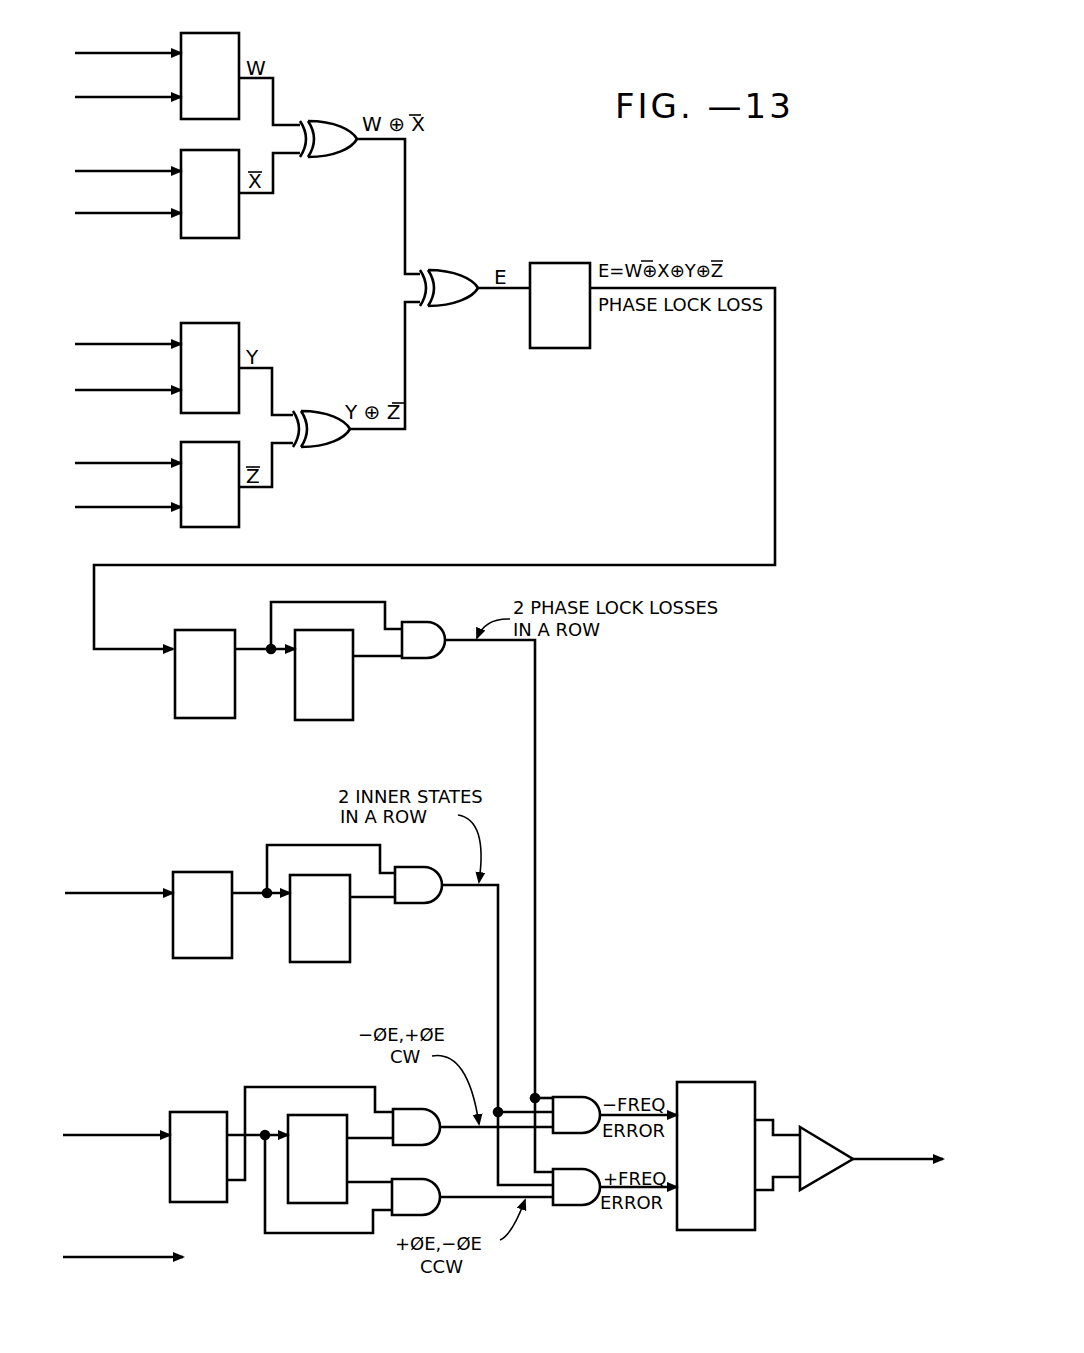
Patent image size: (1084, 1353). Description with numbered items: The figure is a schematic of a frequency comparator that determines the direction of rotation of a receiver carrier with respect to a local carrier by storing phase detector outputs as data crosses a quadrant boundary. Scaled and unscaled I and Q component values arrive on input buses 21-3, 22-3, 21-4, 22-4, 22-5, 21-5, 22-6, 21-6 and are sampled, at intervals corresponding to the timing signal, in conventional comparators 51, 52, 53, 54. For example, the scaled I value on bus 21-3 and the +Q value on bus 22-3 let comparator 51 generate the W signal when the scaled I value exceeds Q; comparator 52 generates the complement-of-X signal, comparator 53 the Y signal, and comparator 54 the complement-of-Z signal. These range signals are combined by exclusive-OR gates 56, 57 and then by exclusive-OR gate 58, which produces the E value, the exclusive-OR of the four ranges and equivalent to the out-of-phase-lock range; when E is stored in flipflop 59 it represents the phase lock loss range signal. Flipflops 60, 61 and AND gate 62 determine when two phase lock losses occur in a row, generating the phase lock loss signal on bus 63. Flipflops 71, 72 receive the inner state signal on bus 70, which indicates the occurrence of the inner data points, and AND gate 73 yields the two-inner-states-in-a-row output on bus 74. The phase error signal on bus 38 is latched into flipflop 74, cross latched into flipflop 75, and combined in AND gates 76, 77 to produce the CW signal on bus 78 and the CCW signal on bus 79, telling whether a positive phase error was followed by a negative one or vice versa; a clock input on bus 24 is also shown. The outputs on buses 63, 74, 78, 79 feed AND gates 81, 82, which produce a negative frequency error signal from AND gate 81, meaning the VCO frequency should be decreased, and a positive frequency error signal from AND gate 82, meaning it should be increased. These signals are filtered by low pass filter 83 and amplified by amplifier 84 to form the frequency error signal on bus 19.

The comparator 51 is at (232, 46).
The comparator 52 is at (232, 228).
The comparator 53 is at (232, 338).
The comparator 54 is at (232, 520).
The exclusive-OR gate 56 is at (327, 121).
The exclusive-OR gate 57 is at (330, 446).
The exclusive-OR gate 58 is at (448, 270).
The flipflop 59 is at (564, 268).
The flipflop 60 is at (172, 704).
The flipflop 61 is at (353, 712).
The AND gate 62 is at (427, 660).
The bus 63 is at (536, 700).
The bus 70 is at (68, 892).
The flipflop 71 is at (200, 878).
The flipflop 72 is at (350, 946).
The AND gate 73 is at (427, 905).
The flipflop 74 is at (455, 876).
The flipflop 75 is at (343, 1165).
The AND gate 76 is at (438, 1140).
The AND gate 77 is at (408, 1188).
The bus 78 is at (446, 1118).
The bus 79 is at (478, 1196).
The AND gate 81 is at (568, 1100).
The AND gate 82 is at (573, 1206).
The low pass filter 83 is at (723, 1090).
The amplifier 84 is at (822, 1142).
The bus 19 is at (915, 1155).
The bus 38 is at (70, 1137).
The clock input 24 is at (118, 1259).
The bus 21-3 is at (76, 52).
The bus 22-3 is at (86, 98).
The signal input +I 21-4 is at (76, 170).
The signal input -.417Q 22-4 is at (88, 214).
The signal input +.417Q 22-5 is at (76, 343).
The signal input +I 21-5 is at (86, 391).
The signal input +Q 22-6 is at (76, 462).
The signal input -.417I 21-6 is at (88, 508).